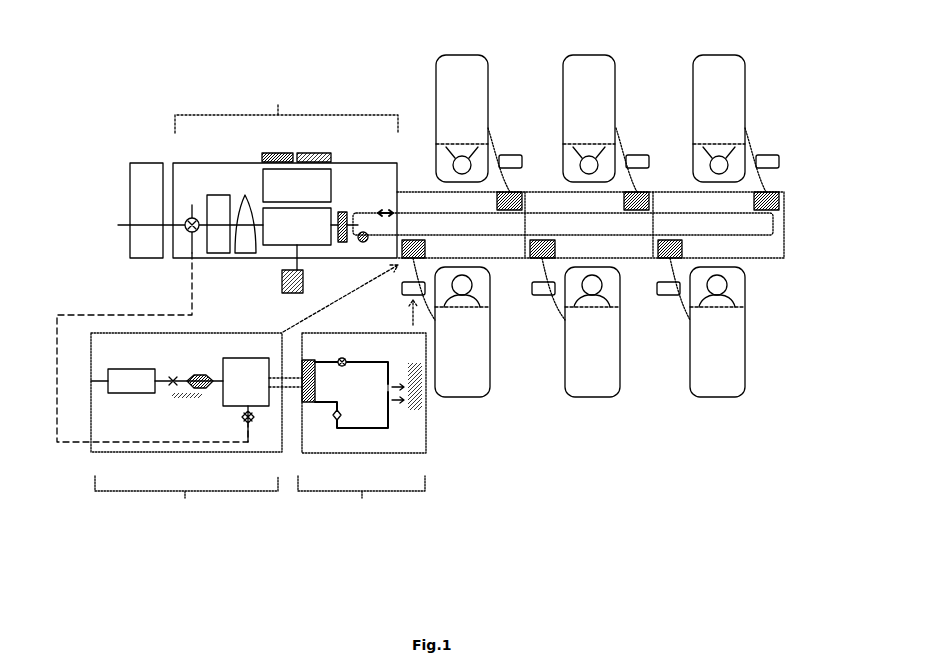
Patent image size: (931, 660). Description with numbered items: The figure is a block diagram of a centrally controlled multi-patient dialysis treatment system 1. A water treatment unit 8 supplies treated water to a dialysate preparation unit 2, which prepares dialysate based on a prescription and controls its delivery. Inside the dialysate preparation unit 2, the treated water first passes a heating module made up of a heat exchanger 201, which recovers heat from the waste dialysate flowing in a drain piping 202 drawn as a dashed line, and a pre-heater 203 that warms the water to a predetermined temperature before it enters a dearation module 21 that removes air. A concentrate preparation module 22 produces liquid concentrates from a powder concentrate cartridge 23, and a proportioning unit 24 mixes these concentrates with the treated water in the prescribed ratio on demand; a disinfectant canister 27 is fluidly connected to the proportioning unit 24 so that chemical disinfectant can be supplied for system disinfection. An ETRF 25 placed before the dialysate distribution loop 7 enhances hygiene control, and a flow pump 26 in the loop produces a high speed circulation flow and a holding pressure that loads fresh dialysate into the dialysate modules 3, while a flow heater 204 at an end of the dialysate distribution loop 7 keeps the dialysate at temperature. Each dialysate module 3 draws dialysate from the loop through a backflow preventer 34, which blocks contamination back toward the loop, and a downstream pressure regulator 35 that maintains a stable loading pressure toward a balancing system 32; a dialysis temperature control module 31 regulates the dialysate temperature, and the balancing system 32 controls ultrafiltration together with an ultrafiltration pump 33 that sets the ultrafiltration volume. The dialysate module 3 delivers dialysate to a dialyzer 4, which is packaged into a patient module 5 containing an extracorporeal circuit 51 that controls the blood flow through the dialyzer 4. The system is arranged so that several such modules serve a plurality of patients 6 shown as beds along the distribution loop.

The centrally controlled multi-patient dialysis treatment system 1 is at (135, 89).
The dialysate preparation unit 2 is at (278, 104).
The dialysate module 3 is at (185, 498).
The dialyzer 4 is at (305, 402).
The patient module 5 is at (362, 498).
The patient 6 is at (465, 165).
The dialysate distribution loop 7 is at (748, 237).
The water treatment unit 8 is at (150, 190).
The dearation module 21 is at (247, 240).
The concentrate preparation module 22 is at (312, 185).
The concentrate cartridge 23 is at (308, 152).
The proportioning unit 24 is at (312, 240).
The ETRF 25 is at (350, 212).
The flow pump 26 is at (360, 243).
The disinfectant canister 27 is at (282, 278).
The dialysis temperature control module 31 is at (205, 375).
The balancing system 32 is at (240, 395).
The ultrafiltration pump 33 is at (246, 422).
The backflow preventer 34 is at (128, 388).
The pressure regulator 35 is at (172, 385).
The extracorporeal circuit 51 is at (390, 418).
The heat exchanger 201 is at (190, 232).
The drain piping 202 is at (100, 315).
The pre-heater 203 is at (218, 240).
The flow heater 204 is at (392, 213).